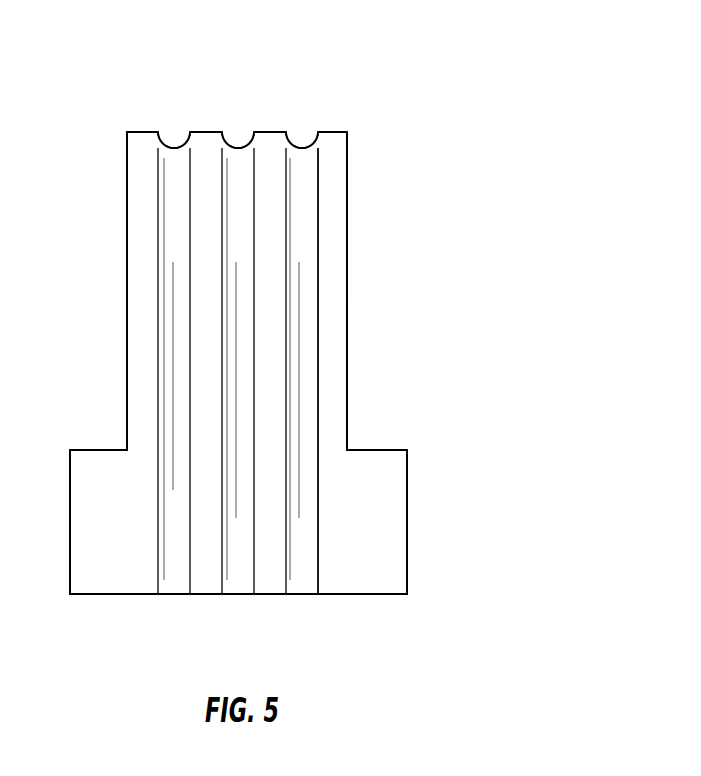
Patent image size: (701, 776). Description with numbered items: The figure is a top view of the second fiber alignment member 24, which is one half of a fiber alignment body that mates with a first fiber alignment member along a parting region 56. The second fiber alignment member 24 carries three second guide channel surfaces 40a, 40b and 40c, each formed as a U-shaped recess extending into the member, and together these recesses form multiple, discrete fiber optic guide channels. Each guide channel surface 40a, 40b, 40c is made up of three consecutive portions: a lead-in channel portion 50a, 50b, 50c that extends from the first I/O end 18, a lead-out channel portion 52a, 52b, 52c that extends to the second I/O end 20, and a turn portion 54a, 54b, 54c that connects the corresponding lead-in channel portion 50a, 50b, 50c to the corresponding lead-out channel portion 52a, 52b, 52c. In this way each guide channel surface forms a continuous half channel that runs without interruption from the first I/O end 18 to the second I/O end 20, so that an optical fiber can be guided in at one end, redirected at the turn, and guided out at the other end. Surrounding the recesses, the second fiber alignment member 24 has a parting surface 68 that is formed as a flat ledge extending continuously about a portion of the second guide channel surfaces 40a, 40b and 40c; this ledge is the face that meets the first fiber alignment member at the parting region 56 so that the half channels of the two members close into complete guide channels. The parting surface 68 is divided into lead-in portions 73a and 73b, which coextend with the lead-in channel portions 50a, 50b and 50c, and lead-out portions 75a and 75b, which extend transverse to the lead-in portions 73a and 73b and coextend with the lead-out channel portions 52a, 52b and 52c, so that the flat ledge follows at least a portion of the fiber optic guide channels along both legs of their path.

The first I/O end 18 is at (199, 627).
The second I/O end 20 is at (294, 96).
The second fiber alignment member 24 is at (500, 96).
The second guide channel surface 40a is at (177, 367).
The second guide channel surface 40b is at (230, 495).
The second guide channel surface 40c is at (305, 545).
The lead-in channel portion 50a is at (178, 422).
The lead-in channel portion 50b is at (235, 243).
The lead-in channel portion 50c is at (308, 295).
The lead-out channel portion 52a is at (174, 147).
The lead-out channel portion 52b is at (235, 147).
The lead-out channel portion 52c is at (302, 147).
The turn portion 54a is at (152, 112).
The turn portion 54b is at (248, 116).
The turn portion 54c is at (334, 110).
The parting region 56 is at (350, 217).
The parting surface 68 is at (328, 395).
The lead-in portion 73a is at (143, 305).
The lead-in portion 73b is at (333, 430).
The lead-out portion 75a is at (143, 132).
The lead-out portion 75b is at (337, 133).